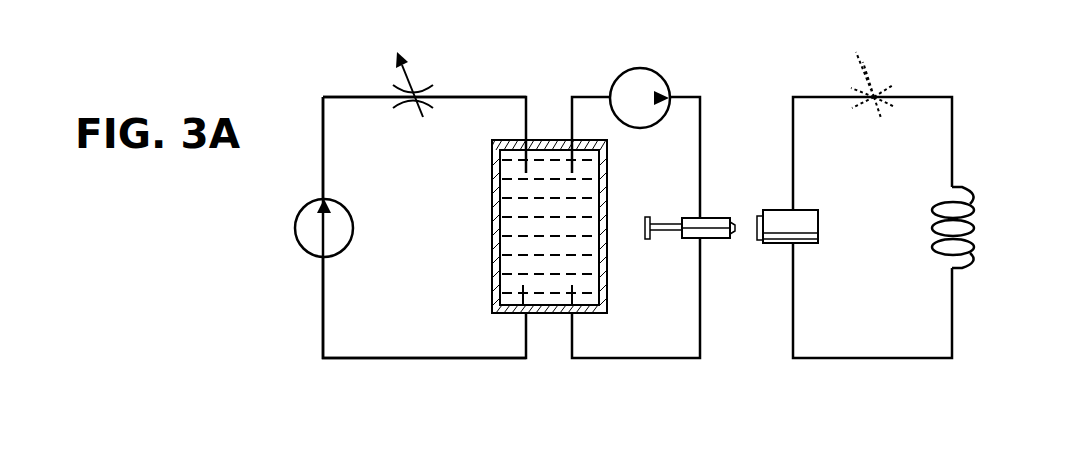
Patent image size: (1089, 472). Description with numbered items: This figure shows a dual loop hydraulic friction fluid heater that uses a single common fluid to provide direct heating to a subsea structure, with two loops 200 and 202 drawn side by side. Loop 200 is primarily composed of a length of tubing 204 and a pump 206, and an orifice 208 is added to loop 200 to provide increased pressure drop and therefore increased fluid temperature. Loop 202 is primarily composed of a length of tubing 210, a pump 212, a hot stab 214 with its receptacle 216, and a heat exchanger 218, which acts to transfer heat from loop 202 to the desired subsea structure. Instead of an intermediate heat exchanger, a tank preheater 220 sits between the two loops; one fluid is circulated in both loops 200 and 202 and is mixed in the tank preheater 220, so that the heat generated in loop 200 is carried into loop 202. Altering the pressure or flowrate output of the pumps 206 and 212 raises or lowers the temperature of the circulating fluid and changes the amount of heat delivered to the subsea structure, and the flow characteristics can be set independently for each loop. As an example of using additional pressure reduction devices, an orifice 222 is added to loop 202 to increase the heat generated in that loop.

The loop 200 is at (348, 62).
The loop 202 is at (920, 70).
The tubing 204 is at (322, 320).
The pump 206 is at (305, 228).
The orifice 208 is at (428, 78).
The tubing 210 is at (953, 322).
The pump 212 is at (640, 72).
The hot stab 214 is at (733, 236).
The receptacle 216 is at (780, 215).
The heat exchanger 218 is at (958, 185).
The tank preheater 220 is at (548, 285).
The orifice 222 is at (874, 95).